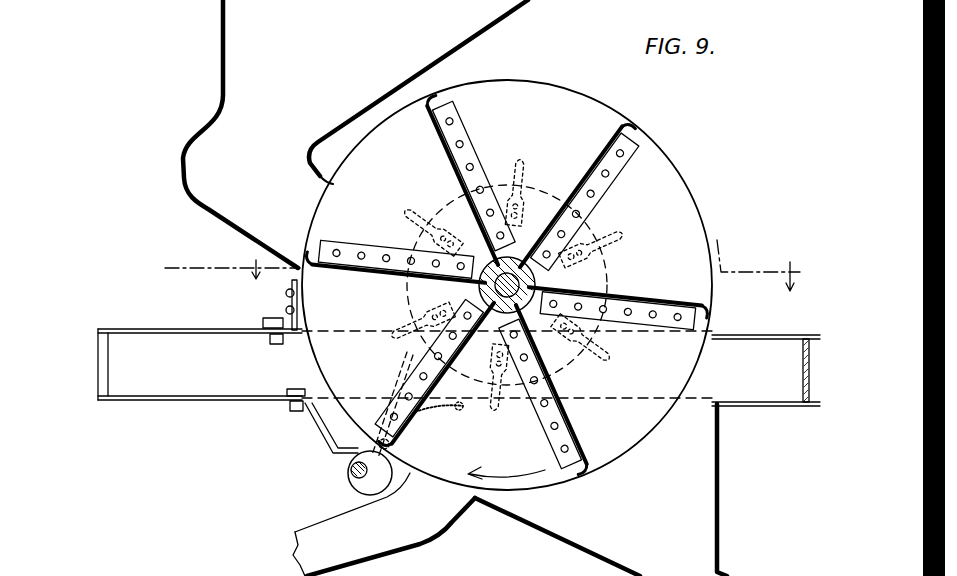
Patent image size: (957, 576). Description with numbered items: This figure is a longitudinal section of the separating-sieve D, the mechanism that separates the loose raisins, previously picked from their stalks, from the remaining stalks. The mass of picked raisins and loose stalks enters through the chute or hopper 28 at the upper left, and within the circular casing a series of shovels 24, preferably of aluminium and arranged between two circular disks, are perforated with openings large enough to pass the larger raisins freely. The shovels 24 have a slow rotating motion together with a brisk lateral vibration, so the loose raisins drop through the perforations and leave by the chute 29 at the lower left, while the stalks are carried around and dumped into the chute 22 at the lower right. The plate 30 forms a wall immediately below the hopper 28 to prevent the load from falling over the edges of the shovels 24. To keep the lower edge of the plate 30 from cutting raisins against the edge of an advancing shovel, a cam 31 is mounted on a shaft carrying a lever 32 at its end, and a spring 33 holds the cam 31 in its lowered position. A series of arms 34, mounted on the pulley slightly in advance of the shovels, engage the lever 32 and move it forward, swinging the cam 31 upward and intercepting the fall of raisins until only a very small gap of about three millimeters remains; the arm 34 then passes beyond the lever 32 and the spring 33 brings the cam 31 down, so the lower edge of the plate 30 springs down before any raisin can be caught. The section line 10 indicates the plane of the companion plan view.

The separating-sieve D is at (507, 260).
The outer rings 10 is at (481, 265).
The chute 22 is at (559, 537).
The shovels 24 is at (456, 134).
The chute or hopper 28 is at (414, 92).
The chute 29 is at (384, 537).
The plate 30 is at (318, 366).
The cam 31 is at (362, 482).
The lever 32 is at (396, 370).
The spring 33 is at (440, 412).
The arms 34 is at (500, 402).